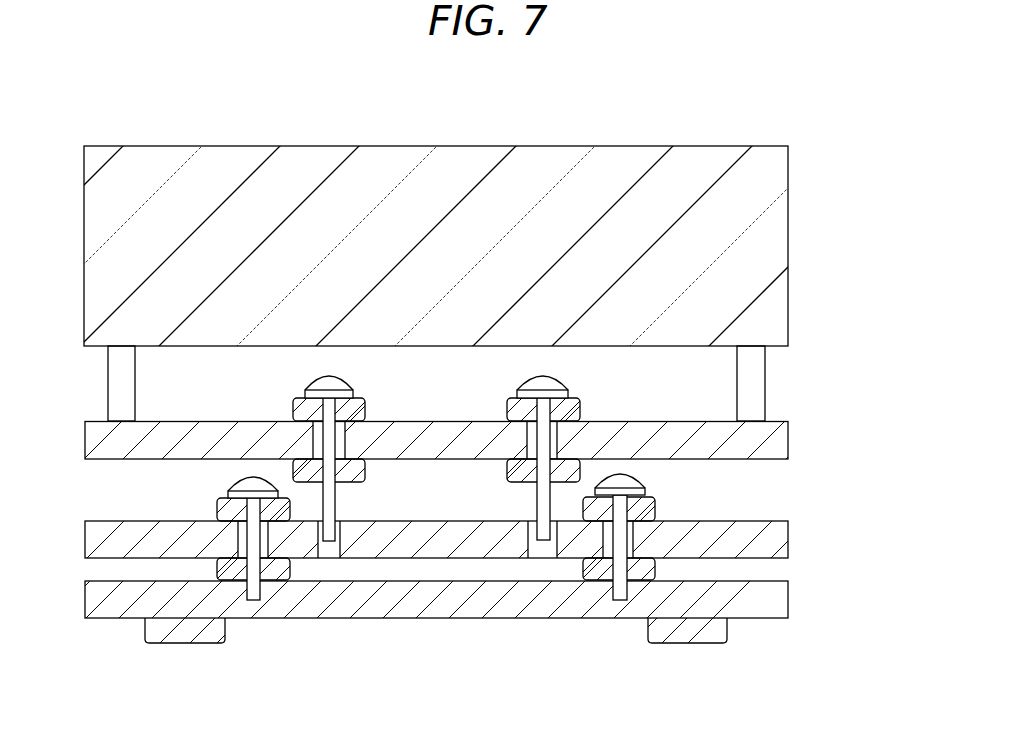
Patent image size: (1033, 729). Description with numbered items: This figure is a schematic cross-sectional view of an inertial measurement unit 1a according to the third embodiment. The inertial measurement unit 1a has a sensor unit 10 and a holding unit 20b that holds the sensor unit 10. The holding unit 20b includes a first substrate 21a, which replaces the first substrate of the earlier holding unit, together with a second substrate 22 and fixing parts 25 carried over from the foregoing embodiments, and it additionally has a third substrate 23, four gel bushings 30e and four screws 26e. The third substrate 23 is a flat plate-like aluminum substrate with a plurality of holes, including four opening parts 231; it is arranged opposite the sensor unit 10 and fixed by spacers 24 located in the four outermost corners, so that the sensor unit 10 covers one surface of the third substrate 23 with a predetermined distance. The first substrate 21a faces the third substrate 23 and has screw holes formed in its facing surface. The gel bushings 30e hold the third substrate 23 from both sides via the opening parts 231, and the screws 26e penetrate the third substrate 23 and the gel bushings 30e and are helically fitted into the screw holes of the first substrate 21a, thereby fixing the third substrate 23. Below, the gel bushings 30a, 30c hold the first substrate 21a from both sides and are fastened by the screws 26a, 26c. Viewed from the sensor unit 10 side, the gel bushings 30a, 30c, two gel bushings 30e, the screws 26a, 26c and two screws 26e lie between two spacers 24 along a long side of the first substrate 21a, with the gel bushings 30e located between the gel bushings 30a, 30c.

The inertial measurement unit 1a is at (769, 100).
The sensor unit 10 is at (788, 243).
The holding unit 20b is at (882, 468).
The first substrate 21a is at (788, 540).
The second substrate 22 is at (788, 600).
The third substrate 23 is at (788, 440).
The opening part 231 is at (507, 407).
The spacer 24 is at (112, 385).
The fixing part 25 is at (192, 645).
The screw 26a is at (233, 487).
The screw 26c is at (637, 488).
The screw 26e is at (317, 383).
The gel bushing 30a is at (213, 517).
The gel bushing 30c is at (653, 517).
The gel bushing 30e is at (293, 417).